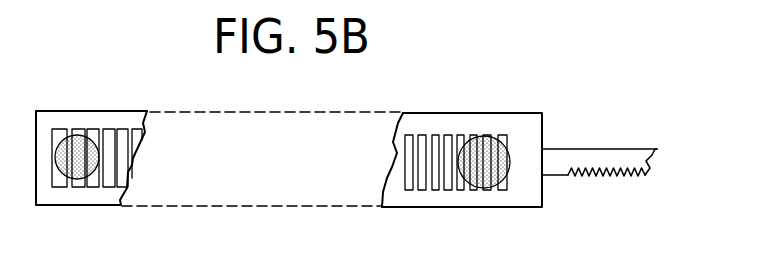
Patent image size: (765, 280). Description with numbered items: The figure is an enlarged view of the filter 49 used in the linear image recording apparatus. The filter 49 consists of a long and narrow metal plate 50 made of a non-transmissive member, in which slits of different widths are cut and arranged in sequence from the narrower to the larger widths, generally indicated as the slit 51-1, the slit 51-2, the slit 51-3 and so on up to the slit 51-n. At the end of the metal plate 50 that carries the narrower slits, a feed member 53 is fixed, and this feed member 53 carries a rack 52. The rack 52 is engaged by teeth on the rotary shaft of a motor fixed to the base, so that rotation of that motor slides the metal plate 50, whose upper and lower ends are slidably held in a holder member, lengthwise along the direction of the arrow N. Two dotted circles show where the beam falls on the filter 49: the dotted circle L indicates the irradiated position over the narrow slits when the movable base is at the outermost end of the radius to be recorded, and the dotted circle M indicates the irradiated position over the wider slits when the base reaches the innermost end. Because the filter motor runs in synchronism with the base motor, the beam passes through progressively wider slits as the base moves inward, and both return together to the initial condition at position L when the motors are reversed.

The filter 49 is at (400, 209).
The metal plate 50 is at (480, 198).
The slit 51-1 is at (503, 135).
The slit 51-2 is at (498, 135).
The slit 51-3 is at (487, 135).
The slit 51-n is at (62, 130).
The dotted circle L is at (476, 136).
The dotted circle M is at (85, 130).
The rack 52 is at (602, 174).
The feed member 53 is at (623, 149).